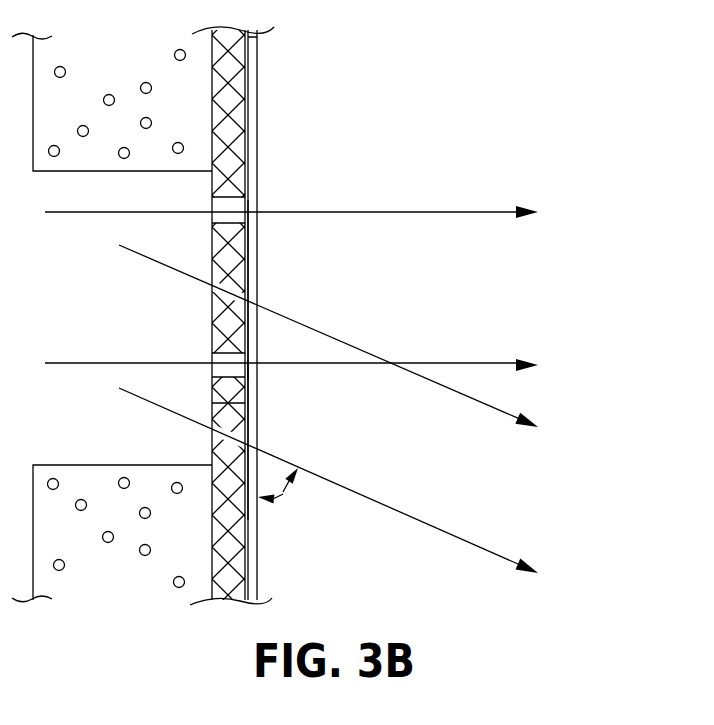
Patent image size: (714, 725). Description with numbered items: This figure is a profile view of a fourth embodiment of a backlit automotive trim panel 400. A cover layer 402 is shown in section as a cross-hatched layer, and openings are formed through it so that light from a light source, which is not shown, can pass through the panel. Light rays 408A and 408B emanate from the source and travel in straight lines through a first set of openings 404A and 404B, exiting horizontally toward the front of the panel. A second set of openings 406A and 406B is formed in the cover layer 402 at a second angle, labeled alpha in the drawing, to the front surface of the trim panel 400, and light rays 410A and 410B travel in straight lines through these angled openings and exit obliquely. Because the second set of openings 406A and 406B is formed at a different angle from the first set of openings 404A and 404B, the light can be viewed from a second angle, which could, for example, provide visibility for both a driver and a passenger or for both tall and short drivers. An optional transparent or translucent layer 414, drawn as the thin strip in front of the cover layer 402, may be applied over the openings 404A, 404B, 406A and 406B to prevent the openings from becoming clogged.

The trim panel 400 is at (330, 304).
The cover layer 402 is at (212, 104).
The opening 404A is at (250, 204).
The opening 404B is at (255, 368).
The opening 406A is at (256, 295).
The opening 406B is at (256, 440).
The light ray 408A is at (497, 212).
The light ray 408B is at (500, 365).
The light ray 410A is at (505, 412).
The light ray 410B is at (490, 551).
The transparent or translucent layer 414 is at (257, 572).